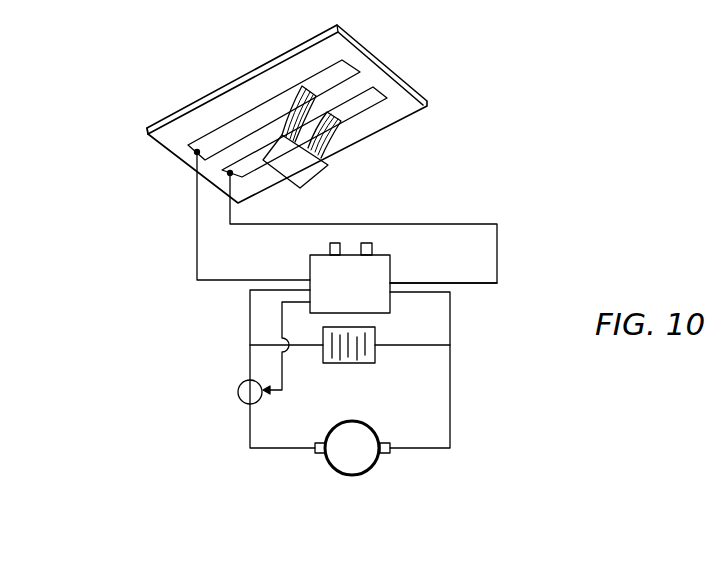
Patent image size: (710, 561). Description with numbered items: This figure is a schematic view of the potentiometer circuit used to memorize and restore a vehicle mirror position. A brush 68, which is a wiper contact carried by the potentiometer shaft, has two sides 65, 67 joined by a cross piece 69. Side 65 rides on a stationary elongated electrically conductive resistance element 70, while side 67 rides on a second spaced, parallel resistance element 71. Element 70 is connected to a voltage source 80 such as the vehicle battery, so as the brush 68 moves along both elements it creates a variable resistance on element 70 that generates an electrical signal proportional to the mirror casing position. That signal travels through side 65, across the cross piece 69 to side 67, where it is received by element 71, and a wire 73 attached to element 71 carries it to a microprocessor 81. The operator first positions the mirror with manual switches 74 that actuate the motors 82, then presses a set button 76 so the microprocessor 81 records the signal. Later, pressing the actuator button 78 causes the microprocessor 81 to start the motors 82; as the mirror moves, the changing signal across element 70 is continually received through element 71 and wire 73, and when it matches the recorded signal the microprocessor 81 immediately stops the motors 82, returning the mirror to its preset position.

The side 65 is at (290, 97).
The resistance element 70 is at (230, 130).
The side 67 is at (327, 145).
The cross piece 69 is at (300, 168).
The brush 68 is at (289, 184).
The resistance element 71 is at (240, 168).
The wire 73 is at (497, 273).
The set button 76 is at (329, 248).
The actuator button 78 is at (373, 247).
The microprocessor 81 is at (392, 267).
The manual switch 74 is at (238, 395).
The voltage source 80 is at (360, 360).
The motor 82 is at (363, 465).